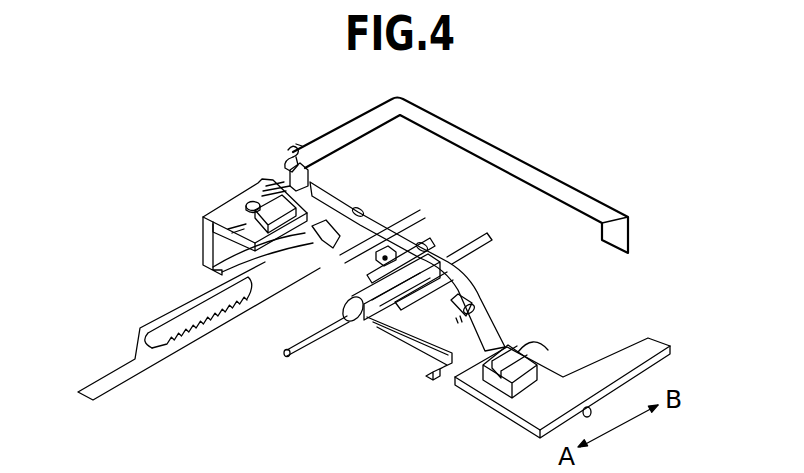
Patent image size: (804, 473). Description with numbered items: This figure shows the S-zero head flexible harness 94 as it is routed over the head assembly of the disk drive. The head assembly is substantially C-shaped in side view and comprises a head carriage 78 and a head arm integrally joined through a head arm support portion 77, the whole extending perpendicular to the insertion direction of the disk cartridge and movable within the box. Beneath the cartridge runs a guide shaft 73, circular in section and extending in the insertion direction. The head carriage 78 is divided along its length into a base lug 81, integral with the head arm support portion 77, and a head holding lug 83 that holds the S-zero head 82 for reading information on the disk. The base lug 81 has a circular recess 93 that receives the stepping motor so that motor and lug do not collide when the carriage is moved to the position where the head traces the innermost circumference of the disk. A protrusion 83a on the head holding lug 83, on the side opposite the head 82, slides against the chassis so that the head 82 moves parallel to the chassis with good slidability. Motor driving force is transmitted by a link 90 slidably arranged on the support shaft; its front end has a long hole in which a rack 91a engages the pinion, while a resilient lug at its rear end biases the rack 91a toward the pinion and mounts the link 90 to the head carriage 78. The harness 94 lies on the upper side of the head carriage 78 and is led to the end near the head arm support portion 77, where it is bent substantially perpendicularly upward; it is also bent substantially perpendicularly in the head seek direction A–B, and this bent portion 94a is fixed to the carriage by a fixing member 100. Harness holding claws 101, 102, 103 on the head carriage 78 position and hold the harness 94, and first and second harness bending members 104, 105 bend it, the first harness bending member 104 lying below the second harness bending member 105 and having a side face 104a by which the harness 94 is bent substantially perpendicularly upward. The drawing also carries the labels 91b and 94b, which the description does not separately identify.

The guide shaft 73 is at (318, 347).
The head arm support portion 77 is at (222, 213).
The head carriage 78 is at (420, 357).
The base lug 81 is at (235, 258).
The S0 head 82 is at (495, 365).
The head holding lug 83 is at (450, 340).
The protrusion 83a is at (589, 417).
The link 90 is at (145, 347).
The rack 91a is at (213, 322).
The guide rail 91b is at (343, 262).
The circular recess 93 is at (208, 292).
The S0 head flexible harness 94 is at (425, 228).
The bent portion 94a is at (292, 150).
The end of rail 94b is at (625, 245).
The fixing member 100 is at (288, 159).
The harness holding claw 101 is at (480, 311).
The harness holding claw 102 is at (438, 236).
The harness holding claw 103 is at (364, 212).
The first harness bending member 104 is at (318, 182).
The side face 104a is at (316, 187).
The second harness bending member 105 is at (302, 146).